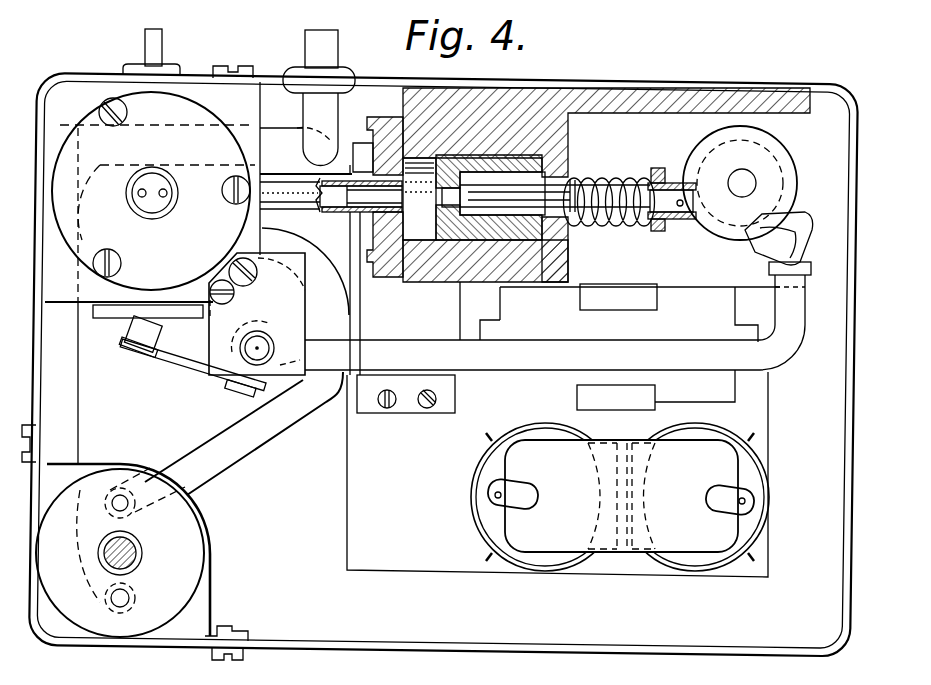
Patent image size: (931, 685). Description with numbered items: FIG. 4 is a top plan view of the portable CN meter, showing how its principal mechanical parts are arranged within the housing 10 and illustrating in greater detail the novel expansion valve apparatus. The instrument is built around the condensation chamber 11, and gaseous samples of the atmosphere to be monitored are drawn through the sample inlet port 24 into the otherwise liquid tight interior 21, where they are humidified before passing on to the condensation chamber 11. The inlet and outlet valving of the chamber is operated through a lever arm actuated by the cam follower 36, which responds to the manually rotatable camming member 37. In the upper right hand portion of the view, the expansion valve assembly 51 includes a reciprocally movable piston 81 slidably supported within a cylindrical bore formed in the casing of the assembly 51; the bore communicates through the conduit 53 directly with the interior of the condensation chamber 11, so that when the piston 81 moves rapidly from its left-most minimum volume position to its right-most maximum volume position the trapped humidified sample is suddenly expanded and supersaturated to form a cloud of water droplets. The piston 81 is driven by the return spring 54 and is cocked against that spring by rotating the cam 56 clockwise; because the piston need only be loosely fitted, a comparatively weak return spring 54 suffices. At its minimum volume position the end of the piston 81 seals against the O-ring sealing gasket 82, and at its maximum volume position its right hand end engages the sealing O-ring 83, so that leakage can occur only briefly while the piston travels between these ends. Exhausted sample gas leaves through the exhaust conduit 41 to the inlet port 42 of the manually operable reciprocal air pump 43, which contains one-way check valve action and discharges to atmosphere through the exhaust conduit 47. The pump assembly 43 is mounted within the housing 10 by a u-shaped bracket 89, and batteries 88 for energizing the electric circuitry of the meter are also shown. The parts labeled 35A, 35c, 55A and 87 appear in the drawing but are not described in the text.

The housing 10 is at (852, 490).
The condensation chamber 11 is at (165, 215).
The liquid tight interior 21 is at (204, 118).
The sample inlet port 24 is at (152, 50).
The pulley block 35A is at (264, 330).
The actuating bar 35c is at (409, 360).
The cam follower 36 is at (790, 300).
The camming member 37 is at (760, 240).
The exhaust conduit 41 is at (328, 284).
The inlet port 42 is at (112, 503).
The air pump 43 is at (178, 593).
The exhaust conduit 47 is at (289, 137).
The expansion valve assembly 51 is at (580, 88).
The conduit 53 is at (322, 214).
The return spring 54 is at (602, 185).
The plunger 55A is at (597, 214).
The cam 56 is at (700, 150).
The movable piston 81 is at (492, 280).
The O-ring sealing gasket 82 is at (400, 120).
The sealing O-ring 83 is at (578, 258).
The battery 87 is at (670, 568).
The batteries 88 is at (745, 460).
The u-shaped bracket 89 is at (205, 525).